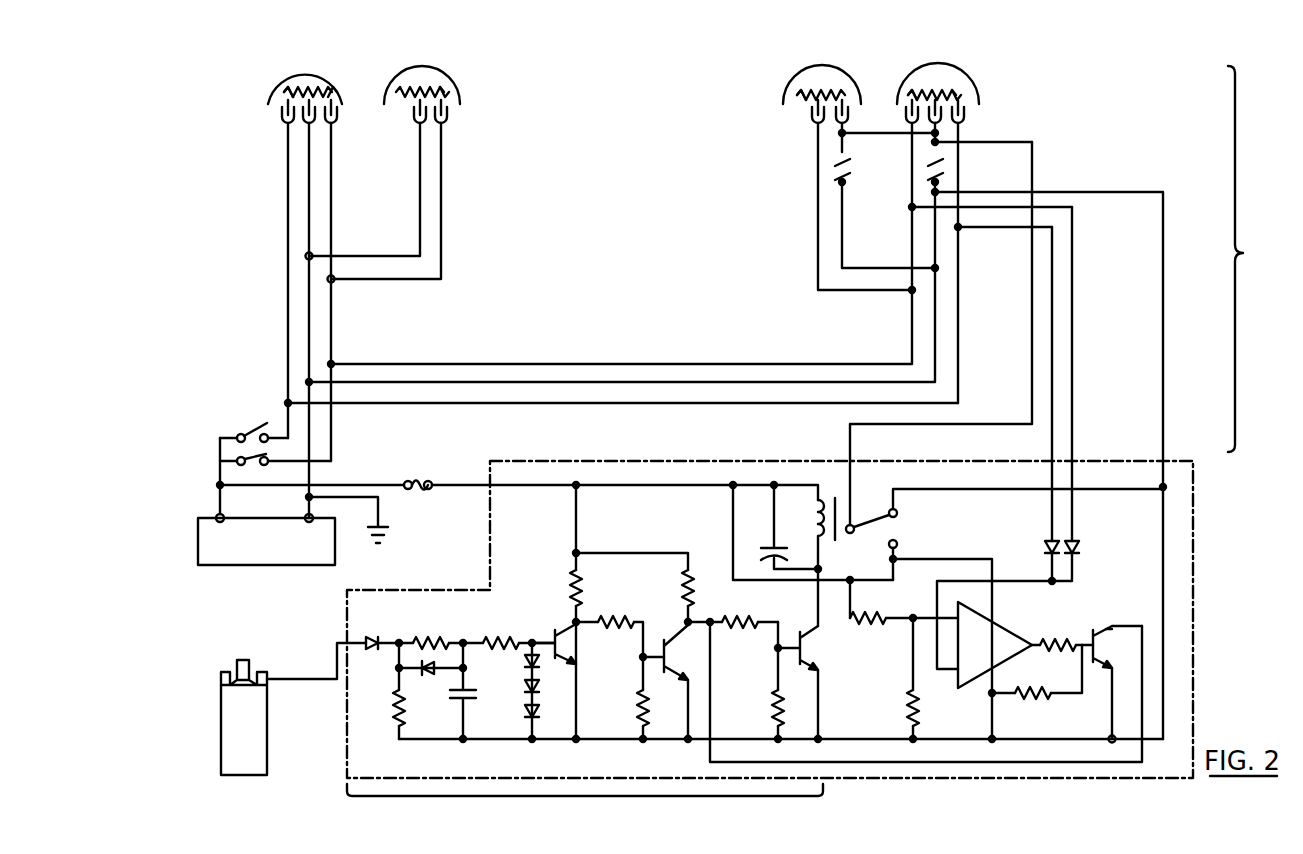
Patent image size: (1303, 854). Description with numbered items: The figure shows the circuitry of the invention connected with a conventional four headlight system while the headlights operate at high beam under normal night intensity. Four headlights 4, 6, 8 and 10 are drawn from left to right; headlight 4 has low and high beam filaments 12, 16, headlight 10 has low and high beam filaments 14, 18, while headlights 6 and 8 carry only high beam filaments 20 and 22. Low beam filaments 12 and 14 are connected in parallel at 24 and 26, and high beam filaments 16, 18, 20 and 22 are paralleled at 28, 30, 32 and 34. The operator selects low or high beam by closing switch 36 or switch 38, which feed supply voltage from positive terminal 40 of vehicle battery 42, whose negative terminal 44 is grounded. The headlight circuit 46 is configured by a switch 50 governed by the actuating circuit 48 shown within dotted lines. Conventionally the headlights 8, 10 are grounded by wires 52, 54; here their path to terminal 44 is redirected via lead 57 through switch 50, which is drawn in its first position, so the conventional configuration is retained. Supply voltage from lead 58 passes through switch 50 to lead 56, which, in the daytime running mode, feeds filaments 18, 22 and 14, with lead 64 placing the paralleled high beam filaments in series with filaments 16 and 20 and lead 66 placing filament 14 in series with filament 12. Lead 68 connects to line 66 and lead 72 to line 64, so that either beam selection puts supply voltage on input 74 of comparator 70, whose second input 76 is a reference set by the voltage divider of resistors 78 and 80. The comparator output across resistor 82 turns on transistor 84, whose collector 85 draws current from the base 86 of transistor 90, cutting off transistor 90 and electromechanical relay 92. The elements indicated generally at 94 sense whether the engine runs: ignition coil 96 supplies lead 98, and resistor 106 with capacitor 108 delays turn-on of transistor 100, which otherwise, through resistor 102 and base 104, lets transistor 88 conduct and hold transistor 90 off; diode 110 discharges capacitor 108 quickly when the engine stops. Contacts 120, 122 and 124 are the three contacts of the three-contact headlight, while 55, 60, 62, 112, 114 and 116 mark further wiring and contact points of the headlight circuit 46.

The headlight 4 is at (290, 82).
The headlight 6 is at (406, 78).
The headlight 8 is at (808, 80).
The headlight 10 is at (922, 80).
The low beam filament 12 is at (283, 90).
The low beam filament 14 is at (963, 80).
The high beam filament 16 is at (338, 82).
The high beam filament 18 is at (912, 90).
The high beam filament 20 is at (450, 78).
The high beam filament 22 is at (797, 90).
The connection point 24 is at (286, 402).
The connection point 26 is at (307, 381).
The connection point 28 is at (332, 363).
The connection point 30 is at (307, 256).
The connection point 32 is at (910, 293).
The connection point 34 is at (938, 268).
The switch 36 is at (240, 434).
The switch 38 is at (238, 459).
The positive terminal 40 is at (216, 505).
The vehicle battery 42 is at (240, 562).
The negative terminal 44 is at (316, 522).
The headlight circuit 46 is at (1248, 259).
The actuating circuit 48 is at (1186, 452).
The switch 50 is at (1004, 614).
The wire 52 is at (843, 256).
The wire 54 is at (960, 214).
The conductor 55 is at (958, 340).
The lead 56 is at (1034, 176).
The lead 57 is at (1163, 288).
The lead 58 is at (445, 484).
The switch contact 60 is at (928, 150).
The switch contact 62 is at (838, 152).
The lead 64 is at (474, 364).
The lead 66 is at (606, 403).
The lead 68 is at (1053, 318).
The comparator 70 is at (996, 632).
The lead 72 is at (1072, 390).
The input 74 is at (955, 673).
The second input 76 is at (948, 617).
The resistor 78 is at (882, 624).
The resistor 80 is at (905, 708).
The resistor 82 is at (1055, 640).
The transistor 84 is at (1116, 652).
The collector 85 is at (1113, 629).
The base 86 is at (781, 645).
The transistor 88 is at (678, 659).
The transistor 90 is at (822, 656).
The electromechanical relay 92 is at (814, 530).
The circuit elements 94 is at (585, 801).
The ignition coil 96 is at (255, 734).
The lead 98 is at (300, 678).
The transistor 100 is at (578, 655).
The resistor 102 is at (608, 621).
The base 104 is at (643, 662).
The resistor 106 is at (422, 642).
The capacitor 108 is at (472, 702).
The diode 110 is at (436, 676).
The switch contact 112 is at (834, 180).
The switch contact 114 is at (947, 170).
The junction 116 is at (910, 208).
The lead 120 is at (966, 142).
The lead 122 is at (960, 128).
The lead 124 is at (910, 132).